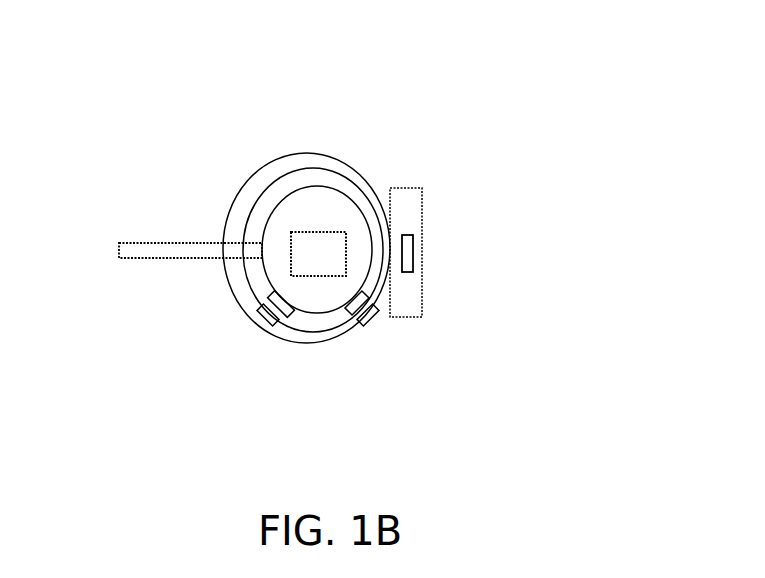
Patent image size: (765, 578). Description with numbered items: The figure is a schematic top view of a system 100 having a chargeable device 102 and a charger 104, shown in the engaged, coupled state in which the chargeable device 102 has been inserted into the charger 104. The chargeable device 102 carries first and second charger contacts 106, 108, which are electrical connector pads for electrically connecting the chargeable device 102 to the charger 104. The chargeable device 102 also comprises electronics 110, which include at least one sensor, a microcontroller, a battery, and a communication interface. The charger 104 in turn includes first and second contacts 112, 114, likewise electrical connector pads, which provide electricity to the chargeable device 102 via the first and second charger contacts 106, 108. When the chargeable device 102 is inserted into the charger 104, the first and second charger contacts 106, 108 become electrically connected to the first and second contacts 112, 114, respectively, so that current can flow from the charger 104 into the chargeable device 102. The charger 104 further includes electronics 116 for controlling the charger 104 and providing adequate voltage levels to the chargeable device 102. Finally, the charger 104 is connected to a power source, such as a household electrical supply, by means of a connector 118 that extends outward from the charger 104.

The system 100 is at (481, 125).
The chargeable device 102 is at (247, 197).
The charger 104 is at (312, 307).
The first charger contact 106 is at (280, 300).
The second charger contact 108 is at (363, 293).
The electronics 110 is at (407, 253).
The first contact 112 is at (272, 315).
The second contact 114 is at (372, 312).
The electronics 116 is at (310, 247).
The connector 118 is at (148, 253).